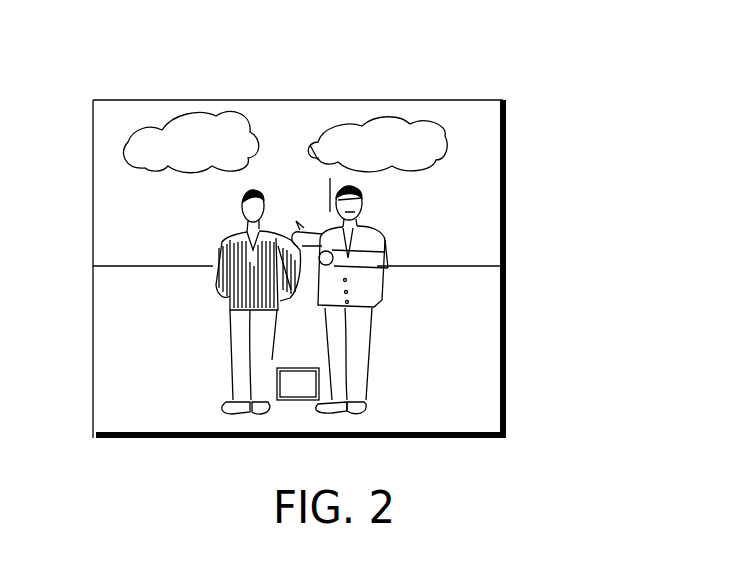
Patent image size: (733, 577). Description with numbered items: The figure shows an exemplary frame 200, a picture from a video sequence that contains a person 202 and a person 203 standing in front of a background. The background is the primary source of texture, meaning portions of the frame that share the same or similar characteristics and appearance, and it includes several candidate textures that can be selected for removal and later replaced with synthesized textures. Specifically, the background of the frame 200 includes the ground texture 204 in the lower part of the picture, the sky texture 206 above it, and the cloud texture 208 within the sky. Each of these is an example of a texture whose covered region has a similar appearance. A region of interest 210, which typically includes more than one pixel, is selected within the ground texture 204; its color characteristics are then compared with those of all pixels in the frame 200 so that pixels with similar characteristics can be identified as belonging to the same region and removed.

The frame 200 is at (543, 148).
The person 202 is at (228, 297).
The person 203 is at (372, 293).
The ground texture 204 is at (427, 415).
The sky texture 206 is at (475, 205).
The cloud texture 208 is at (185, 135).
The region of interest 210 is at (297, 400).